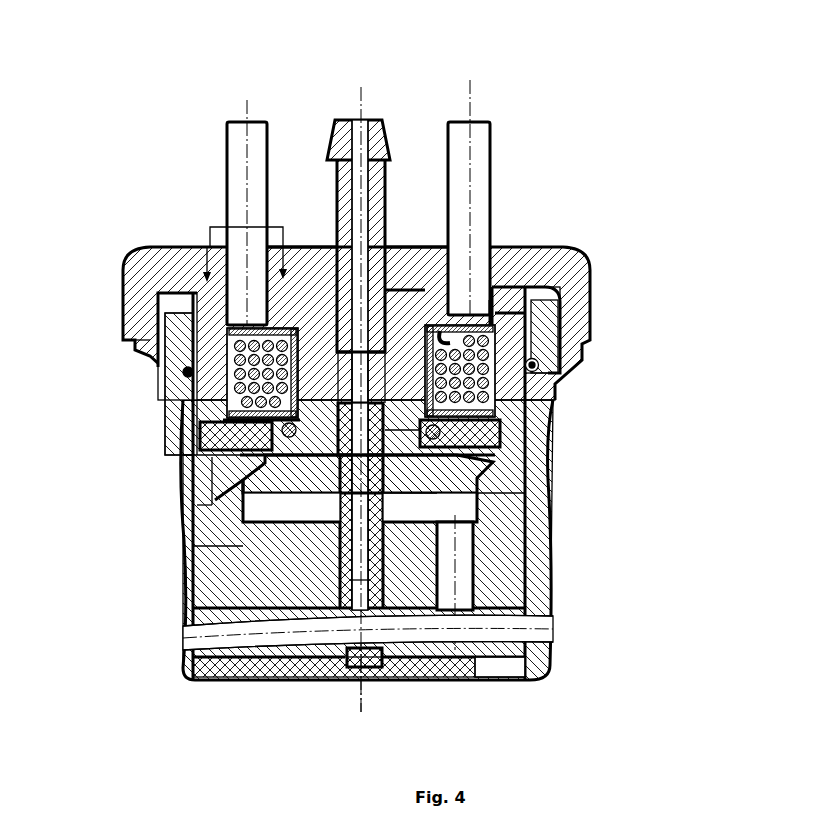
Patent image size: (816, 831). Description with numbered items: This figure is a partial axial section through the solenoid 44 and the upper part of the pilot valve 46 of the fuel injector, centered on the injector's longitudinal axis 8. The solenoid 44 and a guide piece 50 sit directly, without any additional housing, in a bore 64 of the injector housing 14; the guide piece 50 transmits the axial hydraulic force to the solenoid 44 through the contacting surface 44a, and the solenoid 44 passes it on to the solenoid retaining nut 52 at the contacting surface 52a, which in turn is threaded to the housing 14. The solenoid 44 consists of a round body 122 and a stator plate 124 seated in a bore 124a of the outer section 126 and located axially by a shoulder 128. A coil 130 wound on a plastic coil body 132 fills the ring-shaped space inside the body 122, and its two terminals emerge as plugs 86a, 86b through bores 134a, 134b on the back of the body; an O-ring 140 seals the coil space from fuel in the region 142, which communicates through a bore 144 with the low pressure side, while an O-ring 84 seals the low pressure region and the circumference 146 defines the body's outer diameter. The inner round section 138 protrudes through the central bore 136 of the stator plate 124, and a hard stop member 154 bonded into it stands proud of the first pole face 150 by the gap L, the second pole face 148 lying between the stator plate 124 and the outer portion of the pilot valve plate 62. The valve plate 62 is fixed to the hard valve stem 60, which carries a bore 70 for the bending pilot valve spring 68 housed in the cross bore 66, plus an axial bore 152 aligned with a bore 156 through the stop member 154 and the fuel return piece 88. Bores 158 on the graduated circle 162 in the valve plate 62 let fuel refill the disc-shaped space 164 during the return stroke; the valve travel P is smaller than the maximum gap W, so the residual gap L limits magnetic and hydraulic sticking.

The longitudinal axis 8 is at (361, 692).
The injector housing 14 is at (192, 571).
The solenoid 44 is at (180, 395).
The contacting surface 44a is at (208, 505).
The pilot valve 46 is at (392, 557).
The guide piece 50 is at (213, 546).
The solenoid retaining nut 52 is at (563, 260).
The contacting surface 52a is at (507, 287).
The valve stem 60 is at (350, 586).
The pilot valve plate 62 is at (480, 487).
The bore 64 is at (180, 478).
The cross bore 66 is at (207, 617).
The pilot valve spring 68 is at (203, 635).
The bore 70 is at (527, 613).
The O-ring 84 is at (540, 365).
The plug 86a is at (245, 143).
The plug 86b is at (461, 130).
The fuel return piece 88 is at (343, 120).
The round body 122 is at (210, 227).
The stator plate 124 is at (215, 523).
The bore 124a is at (190, 433).
The outer section 126 is at (497, 380).
The shoulder 128 is at (195, 385).
The coil 130 is at (470, 347).
The coil body 132 is at (497, 312).
The bore 134a is at (310, 282).
The bore 134b is at (407, 283).
The central bore 136 is at (560, 422).
The inner round section 138 is at (485, 385).
The O-ring 140 is at (183, 445).
The region 142 is at (477, 508).
The bore 144 is at (462, 533).
The circumference 146 is at (177, 373).
The second pole face 148 is at (445, 432).
The first pole face 150 is at (400, 445).
The bore 152 is at (527, 583).
The stop member 154 is at (372, 395).
The bore 156 is at (352, 390).
The bores 158 is at (300, 470).
The graduated circle 162 is at (437, 495).
The disc-shaped space 164 is at (505, 456).
The gap L is at (322, 445).
The maximum gap W is at (252, 470).
The amount of travel P is at (310, 470).